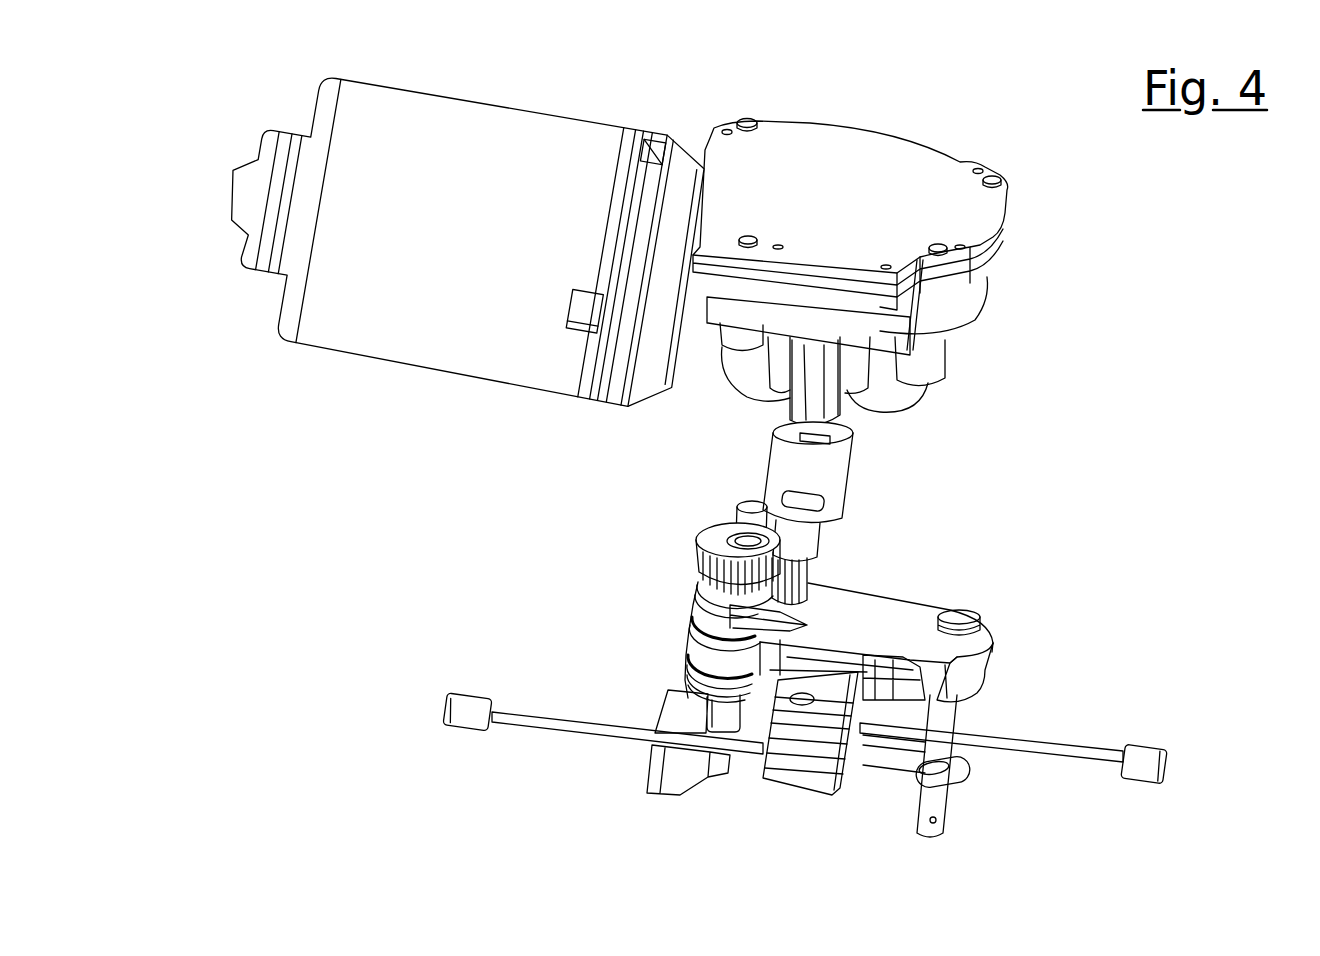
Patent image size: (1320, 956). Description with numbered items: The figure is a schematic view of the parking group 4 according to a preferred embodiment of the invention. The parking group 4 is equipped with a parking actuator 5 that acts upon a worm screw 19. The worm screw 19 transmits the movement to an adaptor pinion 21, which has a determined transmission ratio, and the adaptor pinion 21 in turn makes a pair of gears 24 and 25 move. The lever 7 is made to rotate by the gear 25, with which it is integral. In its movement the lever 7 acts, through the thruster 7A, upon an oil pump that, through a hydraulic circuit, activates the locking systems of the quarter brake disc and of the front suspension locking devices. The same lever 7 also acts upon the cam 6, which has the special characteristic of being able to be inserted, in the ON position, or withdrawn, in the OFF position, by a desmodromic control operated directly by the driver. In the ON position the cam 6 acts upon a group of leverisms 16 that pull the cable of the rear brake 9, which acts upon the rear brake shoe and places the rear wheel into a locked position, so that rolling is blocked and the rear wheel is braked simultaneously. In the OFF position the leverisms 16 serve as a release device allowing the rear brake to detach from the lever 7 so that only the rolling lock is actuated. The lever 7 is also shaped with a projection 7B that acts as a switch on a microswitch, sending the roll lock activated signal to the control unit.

The parking group 4 is at (1147, 260).
The parking actuator 5 is at (490, 157).
The cam 6 is at (960, 687).
The lever 7 is at (883, 608).
The thruster 7A is at (697, 630).
The projection 7B is at (983, 668).
The cable of the rear brake 9 is at (555, 727).
The group of leverisms 16 is at (797, 787).
The worm screw 19 is at (832, 392).
The adaptor pinion 21 is at (790, 467).
The gear 24 is at (810, 572).
The gear 25 is at (698, 553).